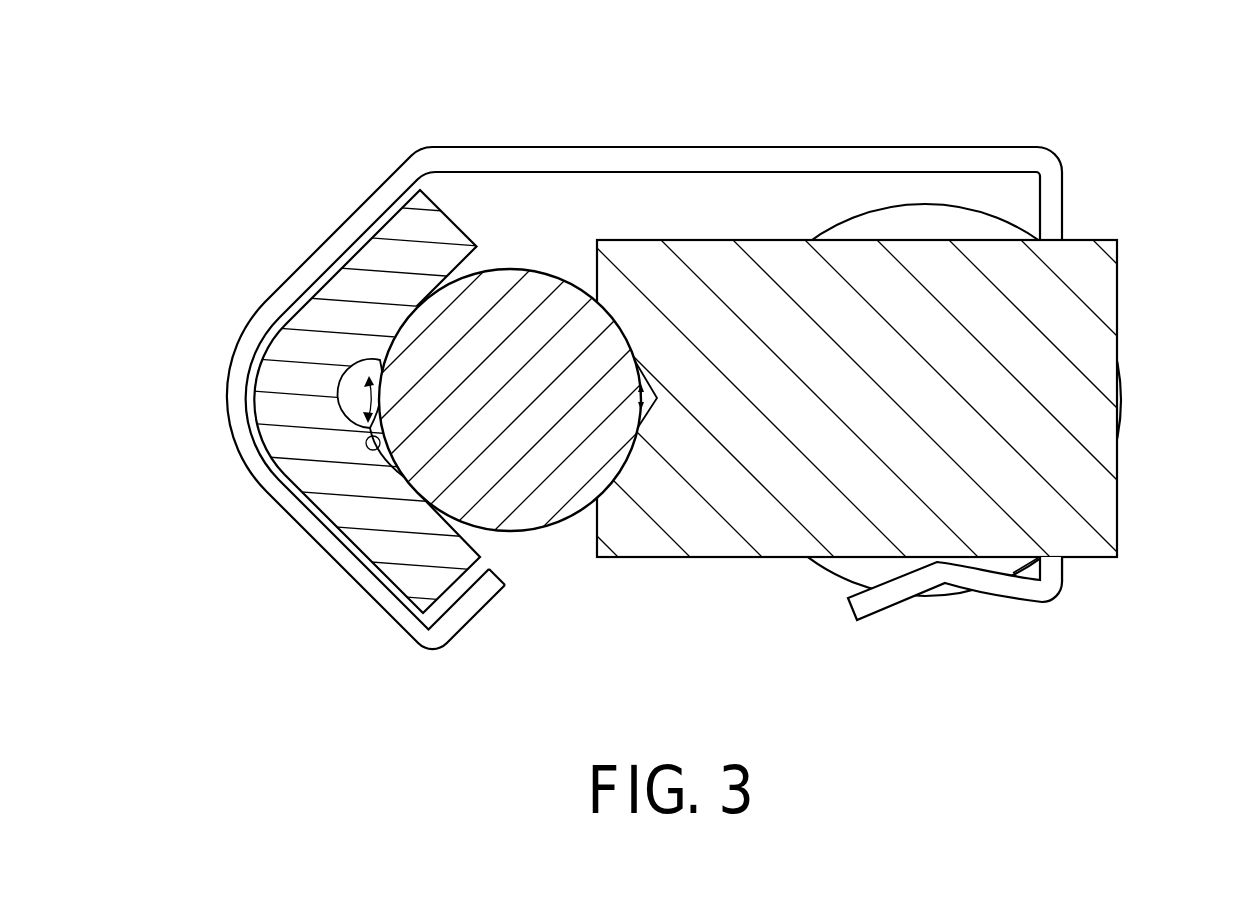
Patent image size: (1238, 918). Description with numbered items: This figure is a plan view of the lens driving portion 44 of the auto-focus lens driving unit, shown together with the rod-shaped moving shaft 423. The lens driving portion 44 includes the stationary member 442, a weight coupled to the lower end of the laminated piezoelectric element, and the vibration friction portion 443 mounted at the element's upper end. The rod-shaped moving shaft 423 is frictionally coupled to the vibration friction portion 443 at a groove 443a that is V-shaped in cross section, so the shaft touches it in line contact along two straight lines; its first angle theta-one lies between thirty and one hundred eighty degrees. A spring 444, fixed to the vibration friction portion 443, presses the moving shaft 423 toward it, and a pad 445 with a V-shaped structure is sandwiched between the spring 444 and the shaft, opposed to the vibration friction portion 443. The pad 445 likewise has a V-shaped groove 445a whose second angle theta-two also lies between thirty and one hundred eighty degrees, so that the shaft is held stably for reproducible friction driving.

The lens driving portion 44 is at (893, 90).
The stationary member 442 is at (928, 213).
The vibration friction portion 443 is at (1108, 368).
The groove 443a is at (645, 425).
The spring 444 is at (613, 160).
The pad 445 is at (383, 545).
The groove 445a is at (380, 450).
The rod-shaped moving shaft 423 is at (537, 510).